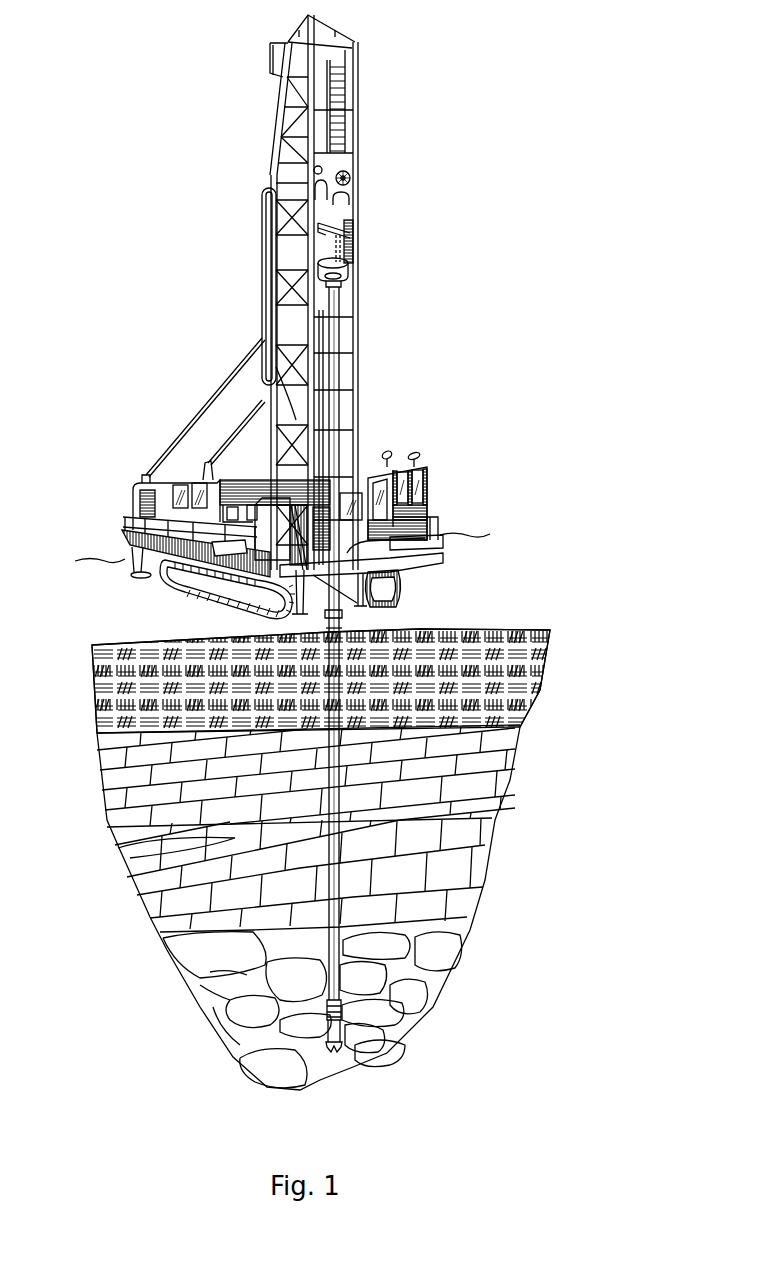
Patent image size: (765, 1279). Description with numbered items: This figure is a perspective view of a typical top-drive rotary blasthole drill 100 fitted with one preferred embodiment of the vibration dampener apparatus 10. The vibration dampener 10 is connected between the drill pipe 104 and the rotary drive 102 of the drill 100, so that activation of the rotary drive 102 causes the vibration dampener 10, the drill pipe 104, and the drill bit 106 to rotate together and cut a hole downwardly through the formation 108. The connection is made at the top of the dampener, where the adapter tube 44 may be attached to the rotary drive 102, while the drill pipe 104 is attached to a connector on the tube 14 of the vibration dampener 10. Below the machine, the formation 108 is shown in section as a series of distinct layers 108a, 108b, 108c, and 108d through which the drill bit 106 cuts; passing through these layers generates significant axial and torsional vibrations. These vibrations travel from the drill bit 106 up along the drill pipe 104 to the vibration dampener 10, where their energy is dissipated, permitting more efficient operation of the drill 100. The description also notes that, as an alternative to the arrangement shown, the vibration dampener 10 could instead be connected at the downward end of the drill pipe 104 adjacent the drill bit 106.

The top-drive rotary blasthole drill 100 is at (205, 311).
The rotary drive 102 is at (320, 218).
The vibration dampener apparatus 10 is at (347, 252).
The adapter tube 44 is at (322, 226).
The tube 14 is at (342, 277).
The drill pipe 104 is at (332, 373).
The drill bit 106 is at (340, 1047).
The formation 108 is at (567, 733).
The layer 108a is at (97, 692).
The layer 108b is at (143, 775).
The layer 108c is at (178, 873).
The layer 108d is at (208, 1005).